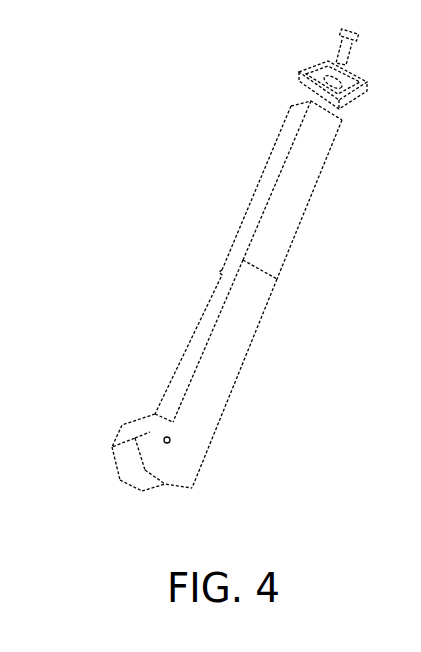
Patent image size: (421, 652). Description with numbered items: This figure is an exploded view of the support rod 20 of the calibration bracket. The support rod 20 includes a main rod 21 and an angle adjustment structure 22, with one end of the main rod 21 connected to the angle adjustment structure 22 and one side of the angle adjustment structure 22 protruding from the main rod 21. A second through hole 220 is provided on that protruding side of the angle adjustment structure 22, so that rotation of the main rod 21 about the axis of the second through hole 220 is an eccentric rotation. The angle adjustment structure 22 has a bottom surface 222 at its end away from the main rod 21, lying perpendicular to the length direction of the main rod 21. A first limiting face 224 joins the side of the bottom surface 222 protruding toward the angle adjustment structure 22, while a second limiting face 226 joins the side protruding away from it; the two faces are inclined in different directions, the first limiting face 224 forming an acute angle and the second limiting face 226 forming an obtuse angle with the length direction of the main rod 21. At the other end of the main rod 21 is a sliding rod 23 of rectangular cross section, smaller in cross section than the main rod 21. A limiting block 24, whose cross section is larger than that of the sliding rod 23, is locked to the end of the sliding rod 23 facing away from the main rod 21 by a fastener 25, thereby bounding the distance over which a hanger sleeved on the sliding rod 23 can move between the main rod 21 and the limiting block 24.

The support rod 20 is at (128, 55).
The main rod 21 is at (231, 354).
The angle adjustment structure 22 is at (152, 430).
The sliding rod 23 is at (281, 243).
The limiting block 24 is at (314, 70).
The fastener 25 is at (342, 52).
The second through hole 220 is at (171, 441).
The bottom surface 222 is at (132, 483).
The first limiting face 224 is at (133, 460).
The second limiting face 226 is at (172, 490).